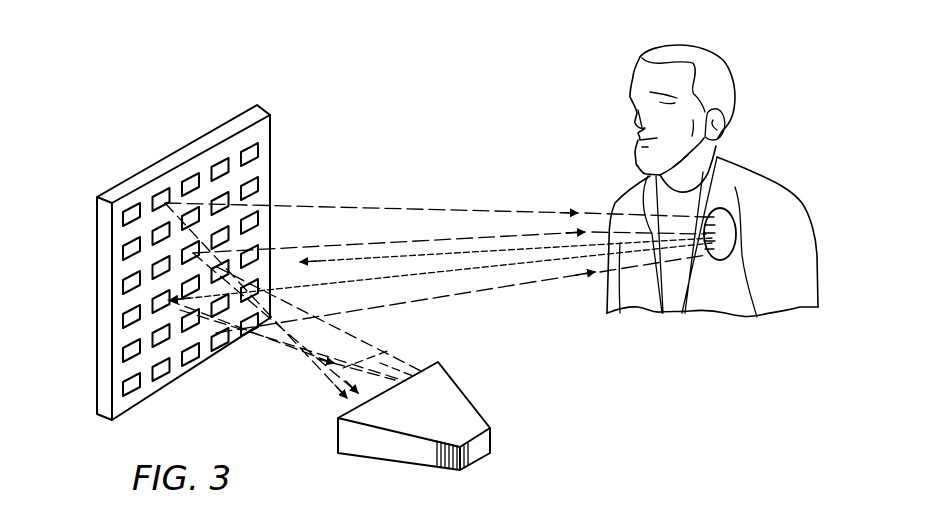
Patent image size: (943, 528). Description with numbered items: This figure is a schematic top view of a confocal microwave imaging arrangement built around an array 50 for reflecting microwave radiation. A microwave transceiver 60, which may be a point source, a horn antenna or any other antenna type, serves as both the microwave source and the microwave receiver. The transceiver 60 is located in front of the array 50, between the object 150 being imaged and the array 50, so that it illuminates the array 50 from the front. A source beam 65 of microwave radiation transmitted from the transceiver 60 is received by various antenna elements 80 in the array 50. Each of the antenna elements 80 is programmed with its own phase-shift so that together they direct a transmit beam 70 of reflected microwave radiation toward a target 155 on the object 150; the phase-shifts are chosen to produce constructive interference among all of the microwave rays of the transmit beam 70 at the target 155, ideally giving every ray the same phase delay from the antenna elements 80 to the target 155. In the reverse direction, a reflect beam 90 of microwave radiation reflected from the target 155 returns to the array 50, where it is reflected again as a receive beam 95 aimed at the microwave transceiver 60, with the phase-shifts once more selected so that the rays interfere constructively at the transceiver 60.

The array 50 is at (92, 308).
The antenna elements 80 is at (252, 184).
The transmit beam 70 is at (437, 210).
The reflect beam 90 is at (392, 256).
The receive beam 95 is at (300, 365).
The source beam 65 is at (380, 358).
The microwave transceiver 60 is at (463, 407).
The object 150 is at (695, 46).
The target 155 is at (732, 200).